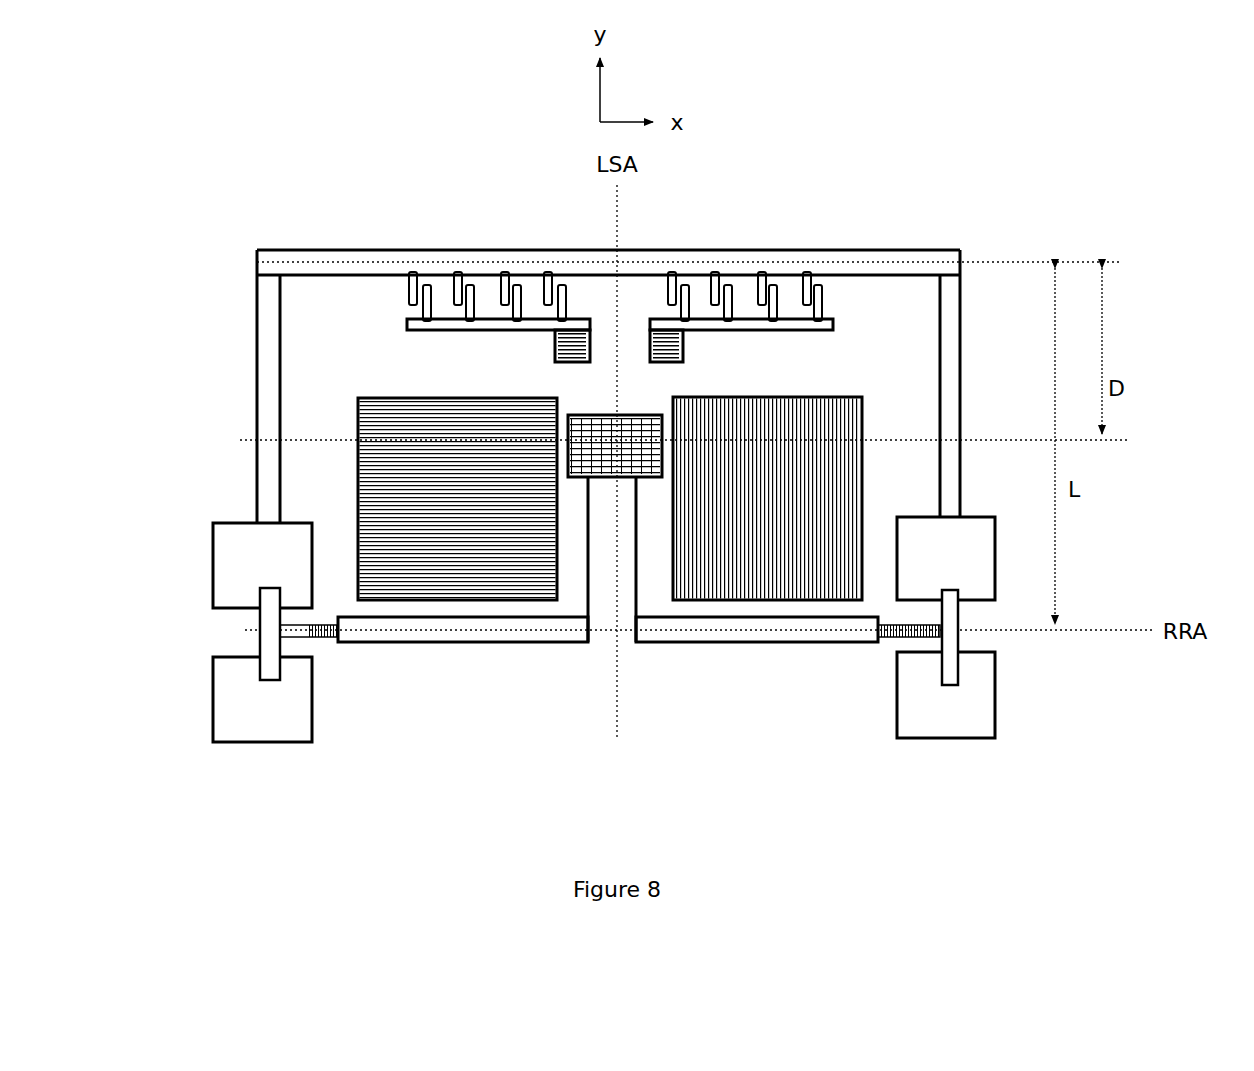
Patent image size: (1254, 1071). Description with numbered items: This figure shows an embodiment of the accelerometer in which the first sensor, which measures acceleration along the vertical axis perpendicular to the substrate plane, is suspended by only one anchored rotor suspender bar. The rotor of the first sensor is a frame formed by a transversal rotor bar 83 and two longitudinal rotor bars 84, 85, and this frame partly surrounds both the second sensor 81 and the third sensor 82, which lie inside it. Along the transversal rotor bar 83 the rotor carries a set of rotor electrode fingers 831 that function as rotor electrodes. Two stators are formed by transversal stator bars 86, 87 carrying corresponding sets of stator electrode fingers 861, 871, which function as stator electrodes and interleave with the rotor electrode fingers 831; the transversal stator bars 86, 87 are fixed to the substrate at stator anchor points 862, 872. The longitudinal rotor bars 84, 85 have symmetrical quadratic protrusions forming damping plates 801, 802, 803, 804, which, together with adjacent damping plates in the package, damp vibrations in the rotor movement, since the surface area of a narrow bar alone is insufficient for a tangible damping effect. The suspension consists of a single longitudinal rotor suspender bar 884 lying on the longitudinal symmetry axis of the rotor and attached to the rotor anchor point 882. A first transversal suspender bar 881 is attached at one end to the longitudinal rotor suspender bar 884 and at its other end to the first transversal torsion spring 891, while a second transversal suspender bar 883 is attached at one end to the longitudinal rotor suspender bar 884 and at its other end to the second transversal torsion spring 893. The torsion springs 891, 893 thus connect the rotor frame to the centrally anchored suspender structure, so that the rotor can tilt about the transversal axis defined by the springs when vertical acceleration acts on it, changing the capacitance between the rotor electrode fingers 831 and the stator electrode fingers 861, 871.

The second sensor 81 is at (823, 486).
The third sensor 82 is at (383, 494).
The transversal rotor bar 83 is at (857, 265).
The longitudinal rotor bar 84 is at (270, 412).
The longitudinal rotor bar 85 is at (948, 358).
The transversal stator bar 86 is at (758, 260).
The transversal stator bar 87 is at (498, 260).
The rotor electrode fingers 831 is at (413, 293).
The stator electrode fingers 861 is at (821, 297).
The stator anchor point 862 is at (672, 349).
The stator electrode fingers 871 is at (562, 300).
The stator anchor point 872 is at (571, 346).
The first transversal suspender bar 881 is at (775, 634).
The rotor anchor point 882 is at (629, 456).
The second transversal suspender bar 883 is at (513, 630).
The longitudinal rotor suspender bar 884 is at (601, 577).
The damping plate 801 is at (245, 562).
The damping plate 802 is at (237, 703).
The damping plate 803 is at (969, 556).
The damping plate 804 is at (947, 708).
The first transversal torsion spring 891 is at (951, 632).
The second transversal torsion spring 893 is at (266, 632).